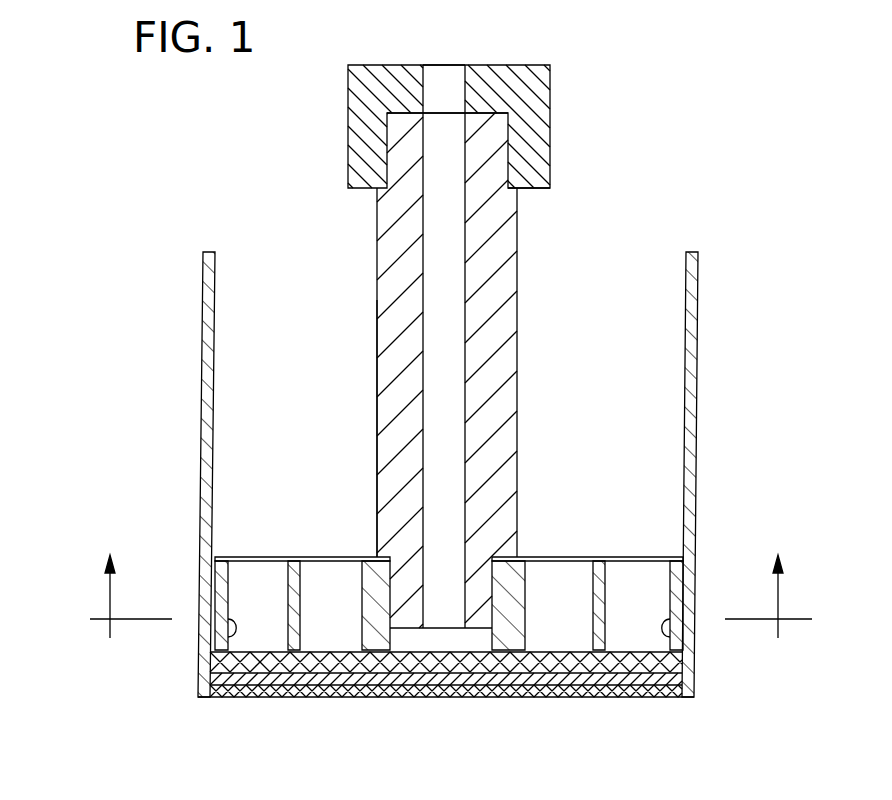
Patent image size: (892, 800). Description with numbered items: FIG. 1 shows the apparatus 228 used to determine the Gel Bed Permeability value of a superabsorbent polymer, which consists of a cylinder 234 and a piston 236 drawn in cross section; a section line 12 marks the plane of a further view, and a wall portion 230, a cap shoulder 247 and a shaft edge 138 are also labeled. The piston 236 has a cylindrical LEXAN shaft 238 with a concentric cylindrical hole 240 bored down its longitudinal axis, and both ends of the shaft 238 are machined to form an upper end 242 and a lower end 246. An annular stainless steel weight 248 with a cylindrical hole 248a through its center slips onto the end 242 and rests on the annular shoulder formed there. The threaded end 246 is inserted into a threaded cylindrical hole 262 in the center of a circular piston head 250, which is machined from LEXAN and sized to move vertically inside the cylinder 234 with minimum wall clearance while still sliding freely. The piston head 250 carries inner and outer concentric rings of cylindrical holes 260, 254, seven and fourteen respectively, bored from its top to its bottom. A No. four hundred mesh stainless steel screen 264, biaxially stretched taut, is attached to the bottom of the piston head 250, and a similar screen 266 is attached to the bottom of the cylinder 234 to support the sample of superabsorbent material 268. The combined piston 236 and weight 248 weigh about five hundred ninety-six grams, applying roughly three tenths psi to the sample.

The section line 12- 12 is at (437, 607).
The stem 138 is at (376, 412).
The apparatus 228 is at (647, 197).
The housing 230 is at (205, 430).
The cylinder 234 is at (697, 460).
The piston 236 is at (553, 448).
The shaft 238 is at (517, 385).
The cylindrical hole 240 is at (466, 228).
The end 242 is at (407, 167).
The end 246 is at (497, 697).
The shoulder 247 is at (527, 177).
The weight 248 is at (348, 118).
The cylindrical hole 248a is at (467, 87).
The piston head 250 is at (688, 557).
The cylindrical holes 254 is at (198, 647).
The cylindrical holes 260 is at (302, 585).
The cylindrical hole 262 is at (385, 695).
The screen 264 is at (583, 697).
The screen 266 is at (418, 698).
The sample of superabsorbent material 268 is at (305, 697).